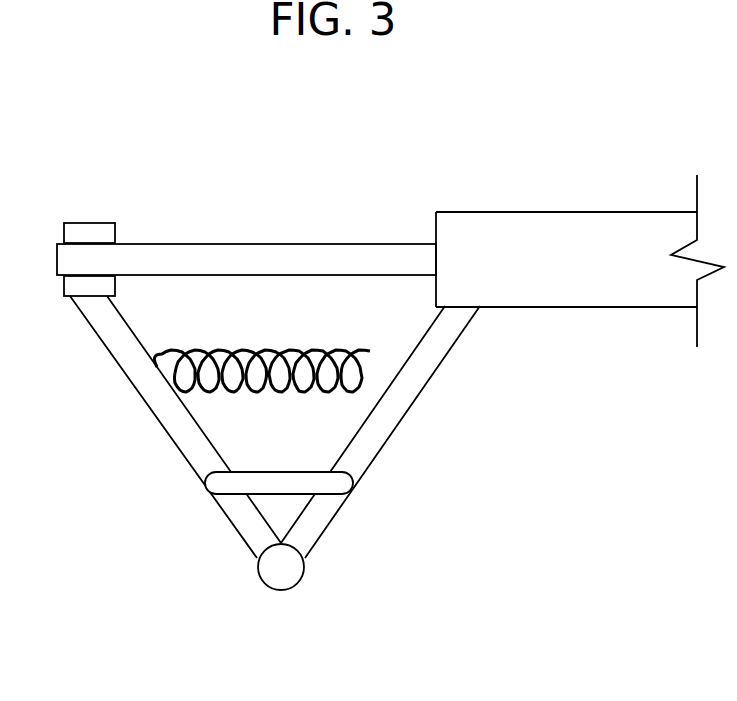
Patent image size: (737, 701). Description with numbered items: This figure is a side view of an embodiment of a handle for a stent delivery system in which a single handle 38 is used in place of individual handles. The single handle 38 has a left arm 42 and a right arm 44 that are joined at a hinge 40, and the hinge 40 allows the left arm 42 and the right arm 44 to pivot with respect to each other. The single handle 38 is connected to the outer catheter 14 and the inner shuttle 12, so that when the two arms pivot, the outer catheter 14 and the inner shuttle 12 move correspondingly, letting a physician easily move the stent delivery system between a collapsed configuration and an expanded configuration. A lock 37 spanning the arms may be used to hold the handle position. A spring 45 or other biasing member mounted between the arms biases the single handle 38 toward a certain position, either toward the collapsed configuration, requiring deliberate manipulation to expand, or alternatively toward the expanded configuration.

The single handle 38 is at (152, 98).
The inner shuttle 12 is at (292, 244).
The outer catheter 14 is at (550, 212).
The left arm 42 is at (180, 430).
The right arm 44 is at (383, 422).
The spring 45 is at (222, 350).
The lock 37 is at (337, 482).
The hinge 40 is at (282, 580).